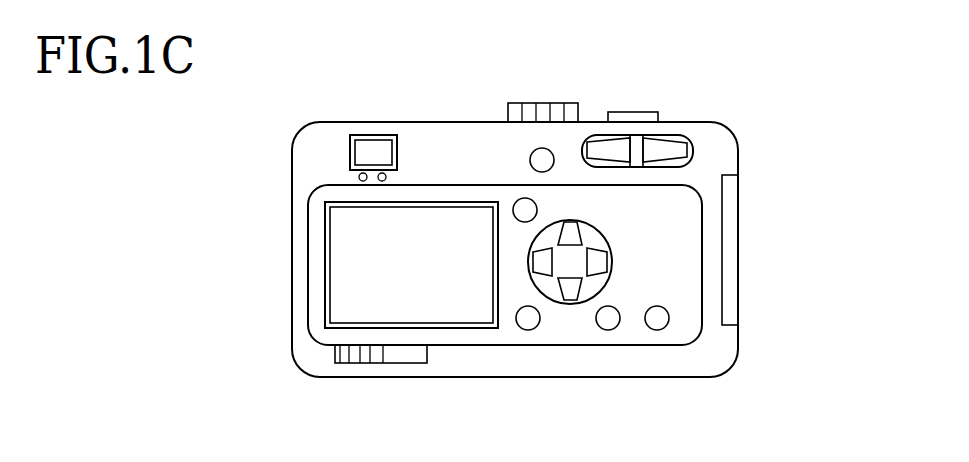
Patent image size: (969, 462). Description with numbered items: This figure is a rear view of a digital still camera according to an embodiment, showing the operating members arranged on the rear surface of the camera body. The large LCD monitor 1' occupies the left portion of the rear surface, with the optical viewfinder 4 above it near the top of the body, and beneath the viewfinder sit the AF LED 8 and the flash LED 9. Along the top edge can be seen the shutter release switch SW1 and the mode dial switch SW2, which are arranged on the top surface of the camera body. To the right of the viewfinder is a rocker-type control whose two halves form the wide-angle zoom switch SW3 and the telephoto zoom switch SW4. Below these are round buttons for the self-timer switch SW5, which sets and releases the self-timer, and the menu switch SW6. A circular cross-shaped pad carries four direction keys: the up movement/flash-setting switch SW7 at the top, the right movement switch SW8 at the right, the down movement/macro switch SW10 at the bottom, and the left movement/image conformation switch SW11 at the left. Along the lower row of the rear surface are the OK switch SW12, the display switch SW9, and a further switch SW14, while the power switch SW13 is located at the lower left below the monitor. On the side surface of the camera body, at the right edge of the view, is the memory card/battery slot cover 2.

The LCD monitor 1' is at (411, 324).
The memory card/battery slot cover 2 is at (732, 302).
The optical viewfinder 4 is at (372, 150).
The AF LED 8 is at (363, 181).
The flash LED 9 is at (382, 183).
The shutter release switch SW1 is at (633, 112).
The mode dial switch SW2 is at (545, 105).
The wide-angle zoom switch SW3 is at (598, 148).
The telephoto zoom switch SW4 is at (667, 147).
The self-timer switch SW5 is at (542, 160).
The menu switch SW6 is at (525, 212).
The up movement/flash-setting switch SW7 is at (572, 230).
The right movement switch SW8 is at (600, 258).
The display switch SW9 is at (608, 318).
The down movement/macro switch SW10 is at (572, 288).
The left movement/image conformation switch SW11 is at (542, 266).
The OK switch SW12 is at (527, 318).
The power switch SW13 is at (362, 357).
The operation switch SW14 is at (657, 318).